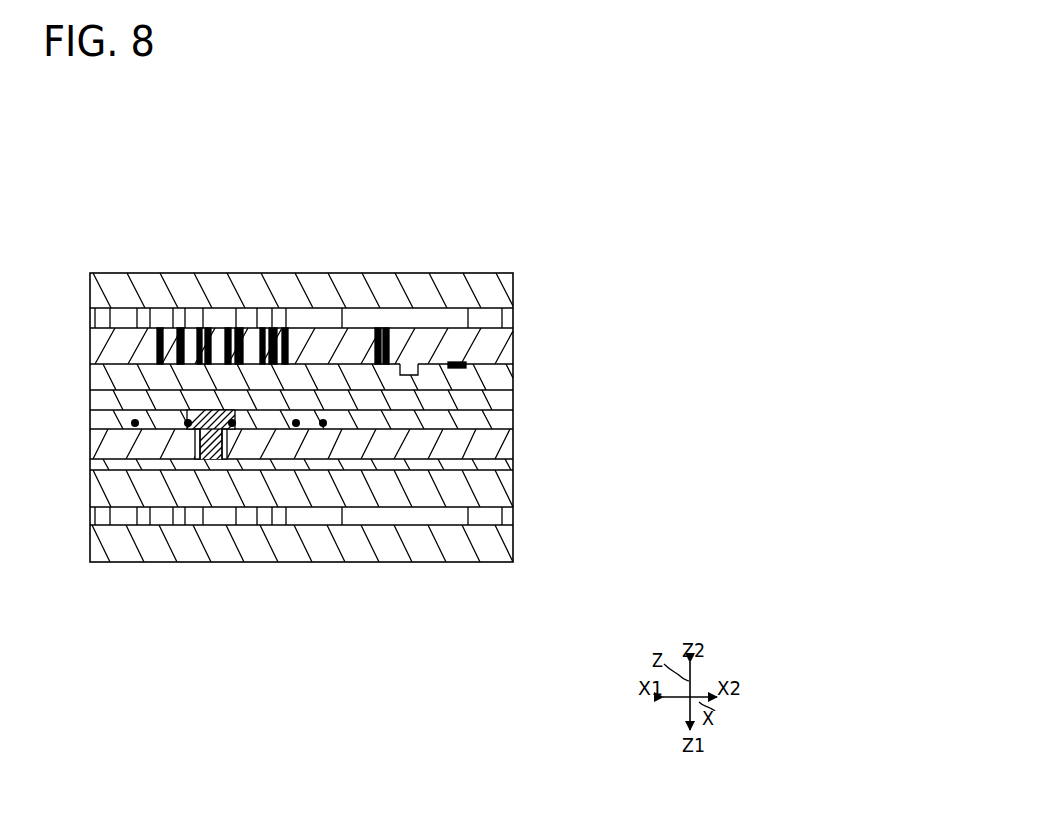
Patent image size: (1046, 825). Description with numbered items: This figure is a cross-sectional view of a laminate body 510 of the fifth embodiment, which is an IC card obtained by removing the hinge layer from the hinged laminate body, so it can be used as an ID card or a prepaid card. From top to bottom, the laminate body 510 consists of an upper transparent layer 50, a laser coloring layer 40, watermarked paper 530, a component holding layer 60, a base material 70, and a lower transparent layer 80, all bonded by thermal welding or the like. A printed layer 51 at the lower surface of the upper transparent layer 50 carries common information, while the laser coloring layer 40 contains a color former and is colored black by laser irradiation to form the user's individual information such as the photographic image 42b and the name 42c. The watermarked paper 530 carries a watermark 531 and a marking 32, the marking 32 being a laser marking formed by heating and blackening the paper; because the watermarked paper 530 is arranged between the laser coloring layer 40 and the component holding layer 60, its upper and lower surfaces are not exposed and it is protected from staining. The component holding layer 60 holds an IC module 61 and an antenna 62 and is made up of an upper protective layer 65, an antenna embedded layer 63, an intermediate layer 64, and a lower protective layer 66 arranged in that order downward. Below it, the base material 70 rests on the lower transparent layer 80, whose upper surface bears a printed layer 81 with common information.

The laminate body 510 is at (553, 150).
The upper transparent layer 50 is at (513, 281).
The printed layer 51 is at (513, 318).
The laser coloring layer 40 is at (513, 345).
The photographic image 42b is at (265, 338).
The name 42c is at (375, 338).
The marking 32 is at (449, 361).
The watermarked paper 530 is at (513, 377).
The watermark 531 is at (412, 376).
The component holding layer 60 is at (577, 390).
The upper protective layer 65 is at (513, 398).
The antenna embedded layer 63 is at (513, 421).
The intermediate layer 64 is at (513, 444).
The lower protective layer 66 is at (513, 467).
The IC module 61 is at (188, 440).
The antenna 62 is at (132, 420).
The base material 70 is at (513, 492).
The printed layer 81 is at (513, 516).
The lower transparent layer 80 is at (513, 541).